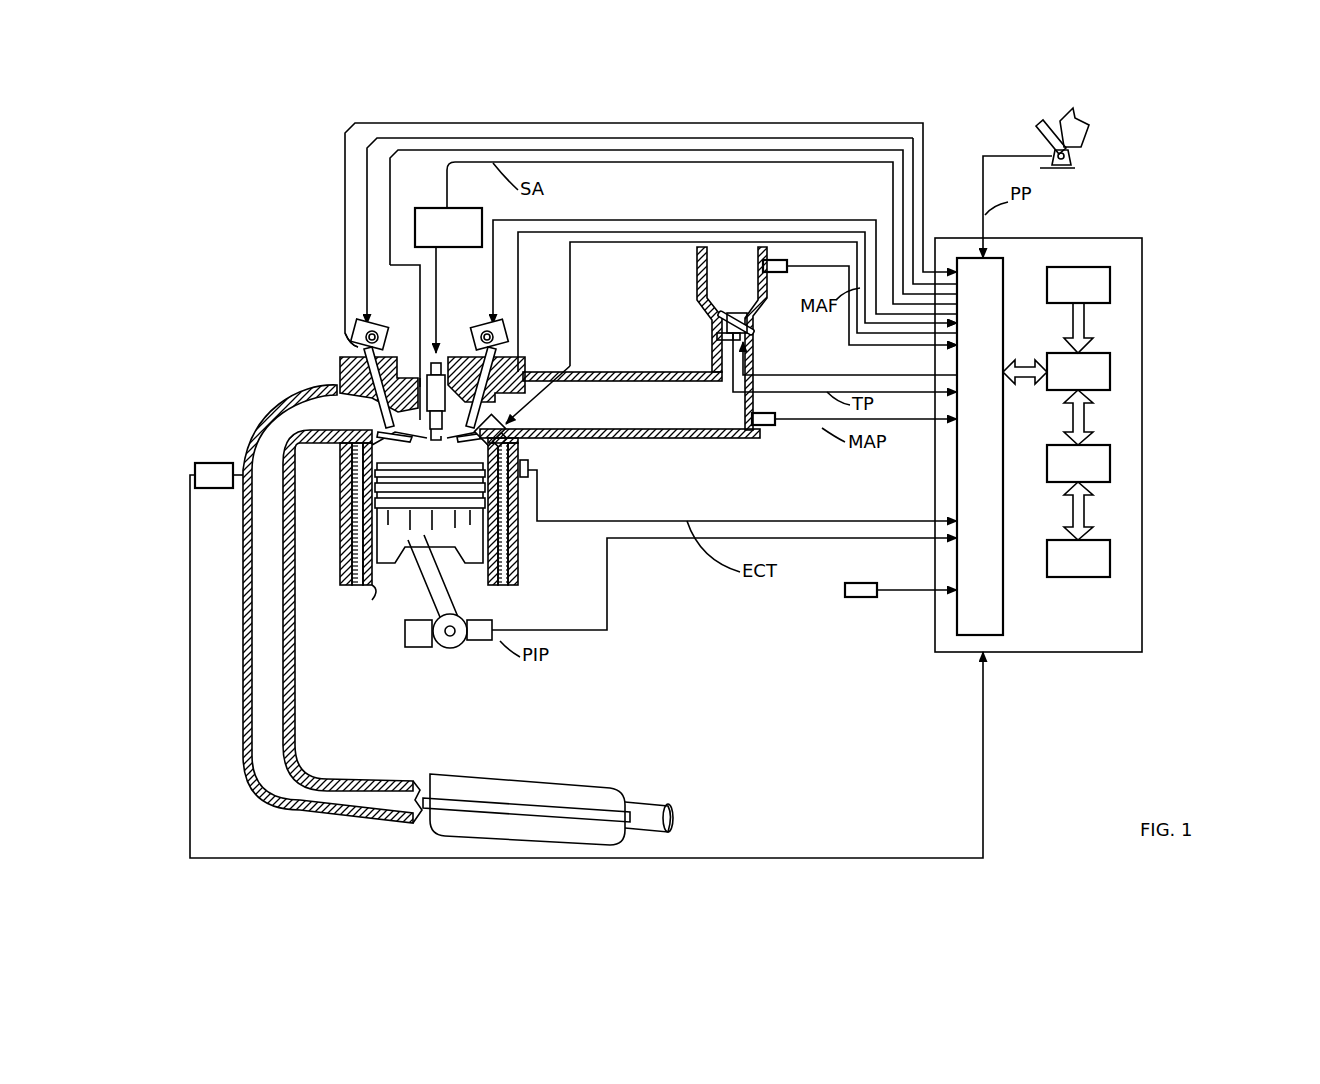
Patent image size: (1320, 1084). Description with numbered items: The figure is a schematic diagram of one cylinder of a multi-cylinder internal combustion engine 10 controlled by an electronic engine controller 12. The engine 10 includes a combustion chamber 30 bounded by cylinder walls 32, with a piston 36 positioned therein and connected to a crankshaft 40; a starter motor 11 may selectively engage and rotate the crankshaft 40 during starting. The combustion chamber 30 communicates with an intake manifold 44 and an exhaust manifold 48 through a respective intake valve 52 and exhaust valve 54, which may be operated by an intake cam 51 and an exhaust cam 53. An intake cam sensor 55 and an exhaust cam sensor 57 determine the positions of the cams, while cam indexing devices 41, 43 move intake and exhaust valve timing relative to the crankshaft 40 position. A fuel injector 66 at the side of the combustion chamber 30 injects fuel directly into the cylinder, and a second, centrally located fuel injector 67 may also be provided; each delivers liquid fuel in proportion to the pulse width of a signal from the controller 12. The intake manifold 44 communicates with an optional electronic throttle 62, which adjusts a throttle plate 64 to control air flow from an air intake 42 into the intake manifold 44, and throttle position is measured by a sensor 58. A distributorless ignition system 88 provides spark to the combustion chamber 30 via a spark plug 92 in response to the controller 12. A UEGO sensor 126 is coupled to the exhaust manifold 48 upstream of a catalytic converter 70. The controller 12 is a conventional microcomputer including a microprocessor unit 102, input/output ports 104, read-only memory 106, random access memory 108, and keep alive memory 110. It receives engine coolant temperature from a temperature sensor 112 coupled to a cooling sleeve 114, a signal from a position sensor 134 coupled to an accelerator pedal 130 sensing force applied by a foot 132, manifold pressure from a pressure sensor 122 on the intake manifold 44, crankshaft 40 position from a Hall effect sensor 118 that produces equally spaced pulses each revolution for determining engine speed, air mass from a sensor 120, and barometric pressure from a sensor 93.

The internal combustion engine 10 is at (283, 313).
The starter motor 11 is at (405, 638).
The electronic engine controller 12 is at (1142, 240).
The combustion chamber 30 is at (423, 473).
The cylinder walls 32 is at (378, 575).
The piston 36 is at (415, 540).
The crankshaft 40 is at (440, 645).
The cam indexing device 41 is at (486, 330).
The air intake 42 is at (750, 293).
The cam indexing device 43 is at (375, 335).
The intake manifold 44 is at (690, 416).
The exhaust manifold 48 is at (322, 420).
The intake cam 51 is at (442, 348).
The intake valve 52 is at (430, 448).
The exhaust cam 53 is at (380, 334).
The exhaust valve 54 is at (357, 383).
The intake cam sensor 55 is at (500, 340).
The exhaust cam sensor 57 is at (356, 343).
The throttle position sensor 58 is at (712, 338).
The electronic throttle 62 is at (750, 325).
The throttle plate 64 is at (712, 327).
The fuel injector 66 is at (510, 448).
The fuel injector 67 is at (418, 395).
The catalytic converter 70 is at (445, 776).
The distributorless ignition system 88 is at (419, 210).
The spark plug 92 is at (442, 360).
The barometric pressure sensor 93 is at (858, 598).
The microprocessor unit 102 is at (1110, 375).
The input/output ports 104 is at (1003, 268).
The read-only memory 106 is at (1110, 285).
The random access memory 108 is at (1110, 465).
The keep alive memory 110 is at (1110, 560).
The temperature sensor 112 is at (537, 478).
The cooling sleeve 114 is at (503, 540).
The Hall effect sensor 118 is at (470, 641).
The air mass sensor 120 is at (787, 262).
The pressure sensor 122 is at (775, 427).
The Universal Exhaust Gas Oxygen (UEGO) sensor 126 is at (195, 466).
The accelerator pedal 130 is at (1042, 128).
The foot 132 is at (1088, 126).
The position sensor 134 is at (1075, 163).